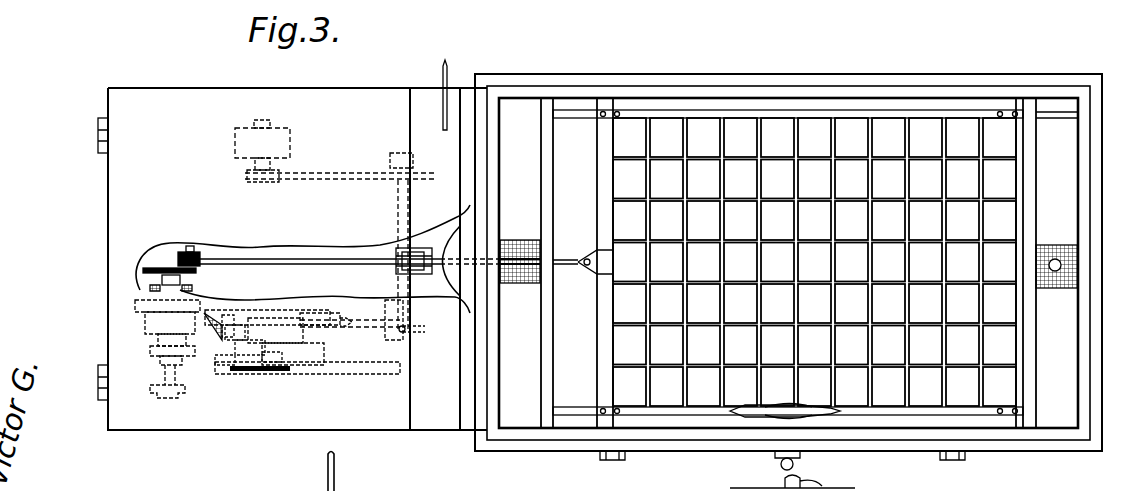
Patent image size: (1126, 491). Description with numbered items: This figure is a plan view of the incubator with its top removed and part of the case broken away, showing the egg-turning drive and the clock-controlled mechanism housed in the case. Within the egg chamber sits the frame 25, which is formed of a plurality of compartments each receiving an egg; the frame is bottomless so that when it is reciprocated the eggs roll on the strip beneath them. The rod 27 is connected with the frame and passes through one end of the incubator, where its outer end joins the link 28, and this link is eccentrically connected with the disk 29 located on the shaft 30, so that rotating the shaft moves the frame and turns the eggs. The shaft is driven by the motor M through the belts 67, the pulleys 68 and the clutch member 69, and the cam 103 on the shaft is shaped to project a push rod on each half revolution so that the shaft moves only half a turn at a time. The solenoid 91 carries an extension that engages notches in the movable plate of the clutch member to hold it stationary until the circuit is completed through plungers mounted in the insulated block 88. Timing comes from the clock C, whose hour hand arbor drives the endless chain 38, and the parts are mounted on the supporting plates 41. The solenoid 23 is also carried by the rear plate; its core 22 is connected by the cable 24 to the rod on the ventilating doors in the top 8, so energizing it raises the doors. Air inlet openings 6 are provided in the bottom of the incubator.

The clock C is at (385, 360).
The motor M is at (235, 132).
The pulleys 68 is at (370, 172).
The link 28 is at (311, 256).
The disk 29 is at (152, 266).
The shaft 30 is at (140, 292).
The clutch member 69 is at (145, 318).
The cam 103 is at (150, 345).
The insulated block 88 is at (208, 315).
The solenoid 91 is at (242, 320).
The solenoid 23 is at (278, 324).
The core 22 is at (322, 325).
The belts 67 is at (376, 318).
The cable 24 is at (405, 328).
The endless chain 38 is at (315, 374).
The supporting plates 41 is at (262, 368).
The frame 25 is at (814, 262).
The top 8 is at (521, 252).
The rod 27 is at (576, 270).
The air inlet openings 6 is at (1056, 258).